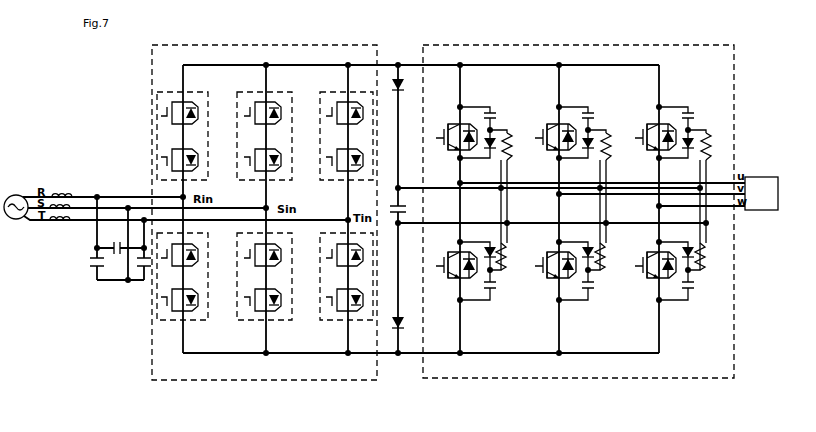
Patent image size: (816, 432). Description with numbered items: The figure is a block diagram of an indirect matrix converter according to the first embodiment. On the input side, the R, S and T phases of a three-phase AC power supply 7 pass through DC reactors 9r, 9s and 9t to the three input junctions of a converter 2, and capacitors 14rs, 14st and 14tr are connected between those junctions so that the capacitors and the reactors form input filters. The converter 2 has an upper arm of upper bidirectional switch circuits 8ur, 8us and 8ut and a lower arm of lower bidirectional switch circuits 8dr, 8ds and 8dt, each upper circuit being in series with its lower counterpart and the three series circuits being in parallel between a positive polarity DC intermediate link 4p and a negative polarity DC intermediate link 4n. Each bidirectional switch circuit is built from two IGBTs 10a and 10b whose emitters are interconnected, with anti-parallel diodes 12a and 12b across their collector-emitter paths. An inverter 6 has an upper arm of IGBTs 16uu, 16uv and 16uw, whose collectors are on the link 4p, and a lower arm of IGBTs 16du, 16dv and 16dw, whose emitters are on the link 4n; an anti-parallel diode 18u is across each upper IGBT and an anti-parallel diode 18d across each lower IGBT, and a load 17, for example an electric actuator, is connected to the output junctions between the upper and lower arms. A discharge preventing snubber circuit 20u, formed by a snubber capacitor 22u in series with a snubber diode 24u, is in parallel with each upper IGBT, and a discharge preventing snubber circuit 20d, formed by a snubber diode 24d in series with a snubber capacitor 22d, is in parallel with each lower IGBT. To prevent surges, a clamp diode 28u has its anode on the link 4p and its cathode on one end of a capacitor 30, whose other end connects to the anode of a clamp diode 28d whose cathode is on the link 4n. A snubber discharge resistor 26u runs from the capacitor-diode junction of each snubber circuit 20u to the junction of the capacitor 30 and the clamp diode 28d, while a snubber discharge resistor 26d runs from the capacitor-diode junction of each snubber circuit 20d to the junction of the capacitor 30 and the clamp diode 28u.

The three-phase AC power supply 7 is at (28, 222).
The DC reactor 9r is at (62, 194).
The DC reactor 9s is at (68, 204).
The DC reactor 9t is at (56, 222).
The capacitor 14rs is at (90, 262).
The capacitor 14tr is at (118, 256).
The capacitor 14st is at (145, 268).
The upper bidirectional switch circuit 8ur is at (162, 94).
The upper bidirectional switch circuit 8us is at (266, 94).
The upper bidirectional switch circuit 8ut is at (346, 128).
The lower bidirectional switch circuit 8dr is at (165, 308).
The lower bidirectional switch circuit 8ds is at (258, 315).
The lower bidirectional switch circuit 8dt is at (333, 315).
The IGBT 10a is at (262, 184).
The IGBT 10b is at (262, 230).
The anti-parallel diode 12a is at (196, 112).
The anti-parallel diode 12b is at (201, 162).
The converter 2 is at (212, 370).
The positive polarity DC intermediate link 4p is at (398, 63).
The negative polarity DC intermediate link 4n is at (394, 356).
The clamp diode 28u is at (405, 88).
The clamp diode 28d is at (406, 325).
The capacitor 30 is at (404, 214).
The inverter 6 is at (607, 368).
The IGBT 16uu is at (455, 128).
The IGBT 16uv is at (557, 128).
The IGBT 16uw is at (657, 128).
The IGBT 16du is at (456, 282).
The IGBT 16dv is at (548, 280).
The IGBT 16dw is at (655, 284).
The anti-parallel diode 18u is at (457, 150).
The anti-parallel diode 18d is at (478, 262).
The discharge preventing snubber circuit 20u is at (488, 94).
The discharge preventing snubber circuit 20d is at (488, 237).
The snubber capacitor 22u is at (592, 120).
The snubber capacitor 22d is at (589, 302).
The snubber diode 24u is at (492, 118).
The snubber diode 24d is at (590, 238).
The snubber discharge resistor 26u is at (506, 148).
The snubber discharge resistor 26d is at (607, 262).
The load 17 is at (763, 211).